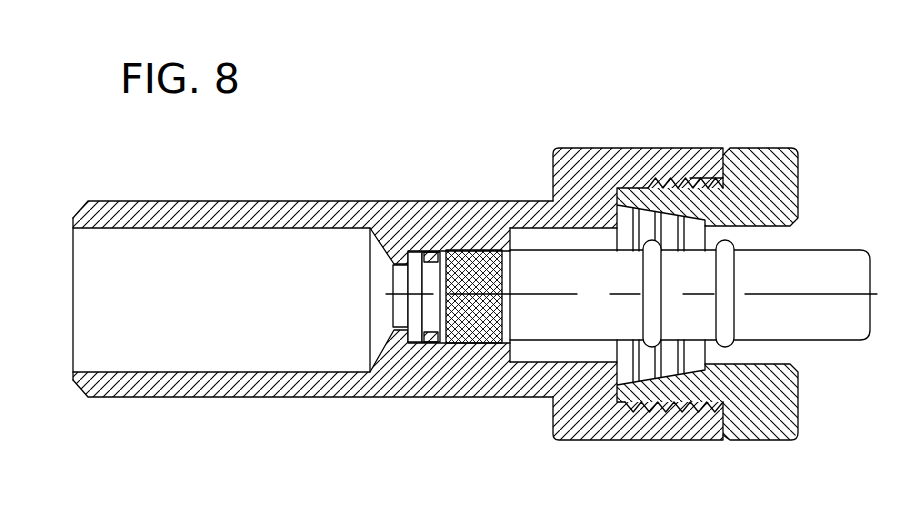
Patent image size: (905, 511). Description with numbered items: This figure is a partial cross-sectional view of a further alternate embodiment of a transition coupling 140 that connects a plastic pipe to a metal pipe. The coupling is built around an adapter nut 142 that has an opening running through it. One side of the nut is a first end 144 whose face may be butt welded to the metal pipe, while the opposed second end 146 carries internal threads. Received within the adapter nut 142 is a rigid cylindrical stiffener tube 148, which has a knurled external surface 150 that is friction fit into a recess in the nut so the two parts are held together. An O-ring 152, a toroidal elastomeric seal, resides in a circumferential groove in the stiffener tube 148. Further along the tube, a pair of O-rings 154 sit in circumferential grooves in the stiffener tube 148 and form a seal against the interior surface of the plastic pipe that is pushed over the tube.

The transition coupling 140 is at (447, 127).
The adapter nut 142 is at (578, 163).
The first end 144 is at (70, 217).
The second end 146 is at (706, 184).
The rigid cylindrical stiffener tube 148 is at (540, 277).
The knurled external surface 150 is at (466, 247).
The O-ring 152 is at (430, 262).
The O-rings 154 is at (653, 281).